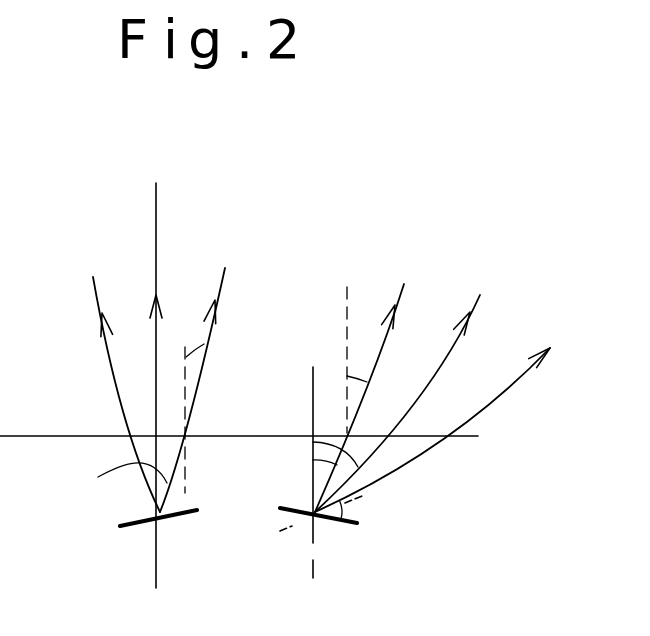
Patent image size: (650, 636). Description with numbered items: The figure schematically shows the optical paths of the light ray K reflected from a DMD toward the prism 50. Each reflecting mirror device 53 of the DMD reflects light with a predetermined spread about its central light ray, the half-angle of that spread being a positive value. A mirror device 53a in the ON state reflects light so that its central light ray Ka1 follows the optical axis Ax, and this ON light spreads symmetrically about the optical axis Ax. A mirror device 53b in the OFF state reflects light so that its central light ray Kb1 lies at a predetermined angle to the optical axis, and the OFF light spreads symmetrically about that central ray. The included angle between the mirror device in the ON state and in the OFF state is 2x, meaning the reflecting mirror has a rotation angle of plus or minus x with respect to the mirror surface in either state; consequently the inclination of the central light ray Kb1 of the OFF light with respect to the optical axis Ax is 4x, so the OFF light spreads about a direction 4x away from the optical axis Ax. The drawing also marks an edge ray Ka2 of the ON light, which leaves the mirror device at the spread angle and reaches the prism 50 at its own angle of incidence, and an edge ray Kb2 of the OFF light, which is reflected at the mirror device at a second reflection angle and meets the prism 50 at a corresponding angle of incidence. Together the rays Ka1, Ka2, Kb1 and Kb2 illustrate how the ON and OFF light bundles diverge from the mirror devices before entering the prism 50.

The prism 50 is at (456, 223).
The mirror device 53 is at (430, 508).
The mirror device in the ON state 53a is at (131, 526).
The mirror device in the OFF state 53b is at (339, 515).
The included angle of the mirror device in the ON state and OFF state 2x is at (340, 511).
The inclination of the central light ray of the OFF light 4x is at (324, 440).
The optical axis Ax is at (155, 218).
The central light ray of the ON light Ka1 is at (153, 252).
The light ray of the ON light Ka2 is at (225, 273).
The central light ray of the OFF light Kb1 is at (480, 295).
The light ray of the OFF light Kb2 is at (404, 284).